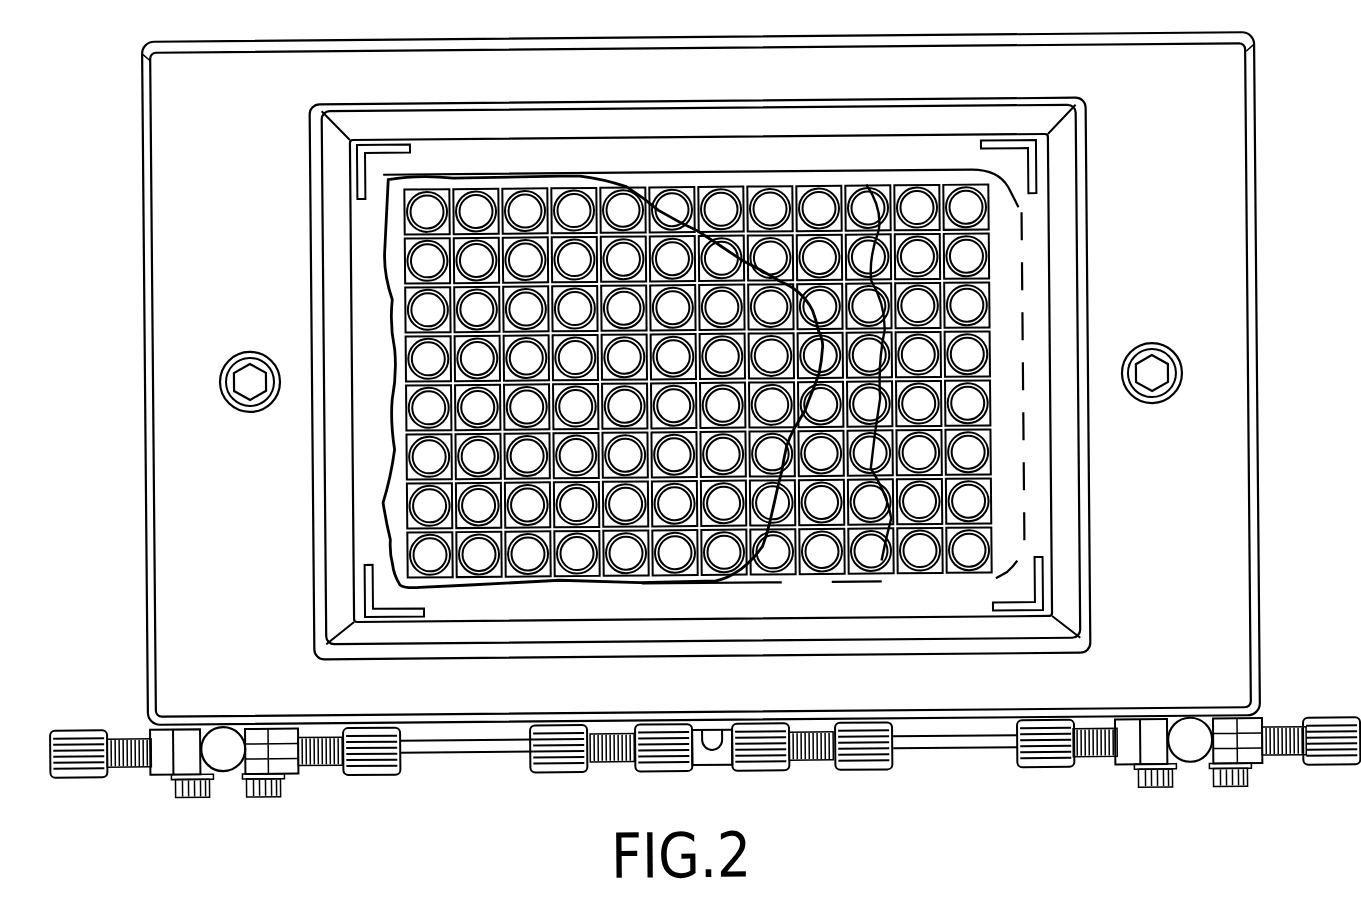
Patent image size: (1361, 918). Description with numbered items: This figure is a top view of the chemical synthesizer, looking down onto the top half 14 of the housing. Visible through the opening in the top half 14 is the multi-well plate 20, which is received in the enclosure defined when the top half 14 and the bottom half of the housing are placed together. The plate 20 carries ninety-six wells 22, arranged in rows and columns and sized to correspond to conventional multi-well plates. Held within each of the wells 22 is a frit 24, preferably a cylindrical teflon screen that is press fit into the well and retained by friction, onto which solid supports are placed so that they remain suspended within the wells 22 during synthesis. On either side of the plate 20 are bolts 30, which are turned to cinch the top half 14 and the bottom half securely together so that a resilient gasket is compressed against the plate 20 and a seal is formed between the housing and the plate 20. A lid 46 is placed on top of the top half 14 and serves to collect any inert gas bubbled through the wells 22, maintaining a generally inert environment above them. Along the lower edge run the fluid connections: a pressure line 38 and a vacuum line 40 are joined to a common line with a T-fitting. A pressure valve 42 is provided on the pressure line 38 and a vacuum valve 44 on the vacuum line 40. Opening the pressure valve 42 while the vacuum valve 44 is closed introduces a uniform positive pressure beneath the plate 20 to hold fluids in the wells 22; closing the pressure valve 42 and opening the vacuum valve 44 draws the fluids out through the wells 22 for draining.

The top half 14 is at (1212, 524).
The multi-well plate 20 is at (404, 464).
The wells 22 is at (972, 552).
The frit 24 is at (688, 548).
The bolts 30 is at (1166, 376).
The pressure line 38 is at (519, 745).
The vacuum line 40 is at (1002, 745).
The pressure valve 42 is at (225, 757).
The vacuum valve 44 is at (1192, 756).
The lid 46 is at (1088, 231).